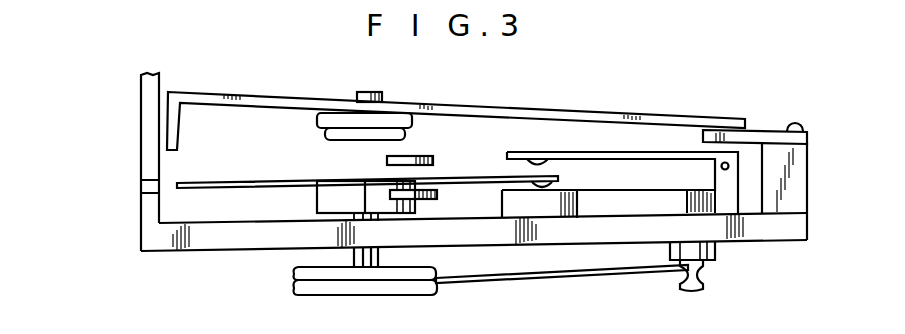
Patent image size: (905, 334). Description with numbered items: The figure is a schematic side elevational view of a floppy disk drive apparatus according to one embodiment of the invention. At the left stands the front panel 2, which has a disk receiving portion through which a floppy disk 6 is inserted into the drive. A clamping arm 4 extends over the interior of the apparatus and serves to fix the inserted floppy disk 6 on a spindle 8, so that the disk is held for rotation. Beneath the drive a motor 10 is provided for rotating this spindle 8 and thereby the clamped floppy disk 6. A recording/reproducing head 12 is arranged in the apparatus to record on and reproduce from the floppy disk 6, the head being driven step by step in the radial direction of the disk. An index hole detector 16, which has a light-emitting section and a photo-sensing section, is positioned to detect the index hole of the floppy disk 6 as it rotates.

The front panel 2 is at (143, 208).
The clamping arm 4 is at (549, 110).
The floppy disk 6 is at (240, 182).
The spindle 8 is at (317, 189).
The motor 10 is at (716, 250).
The recording/reproducing head 12 is at (553, 162).
The index hole detector 16 is at (434, 160).